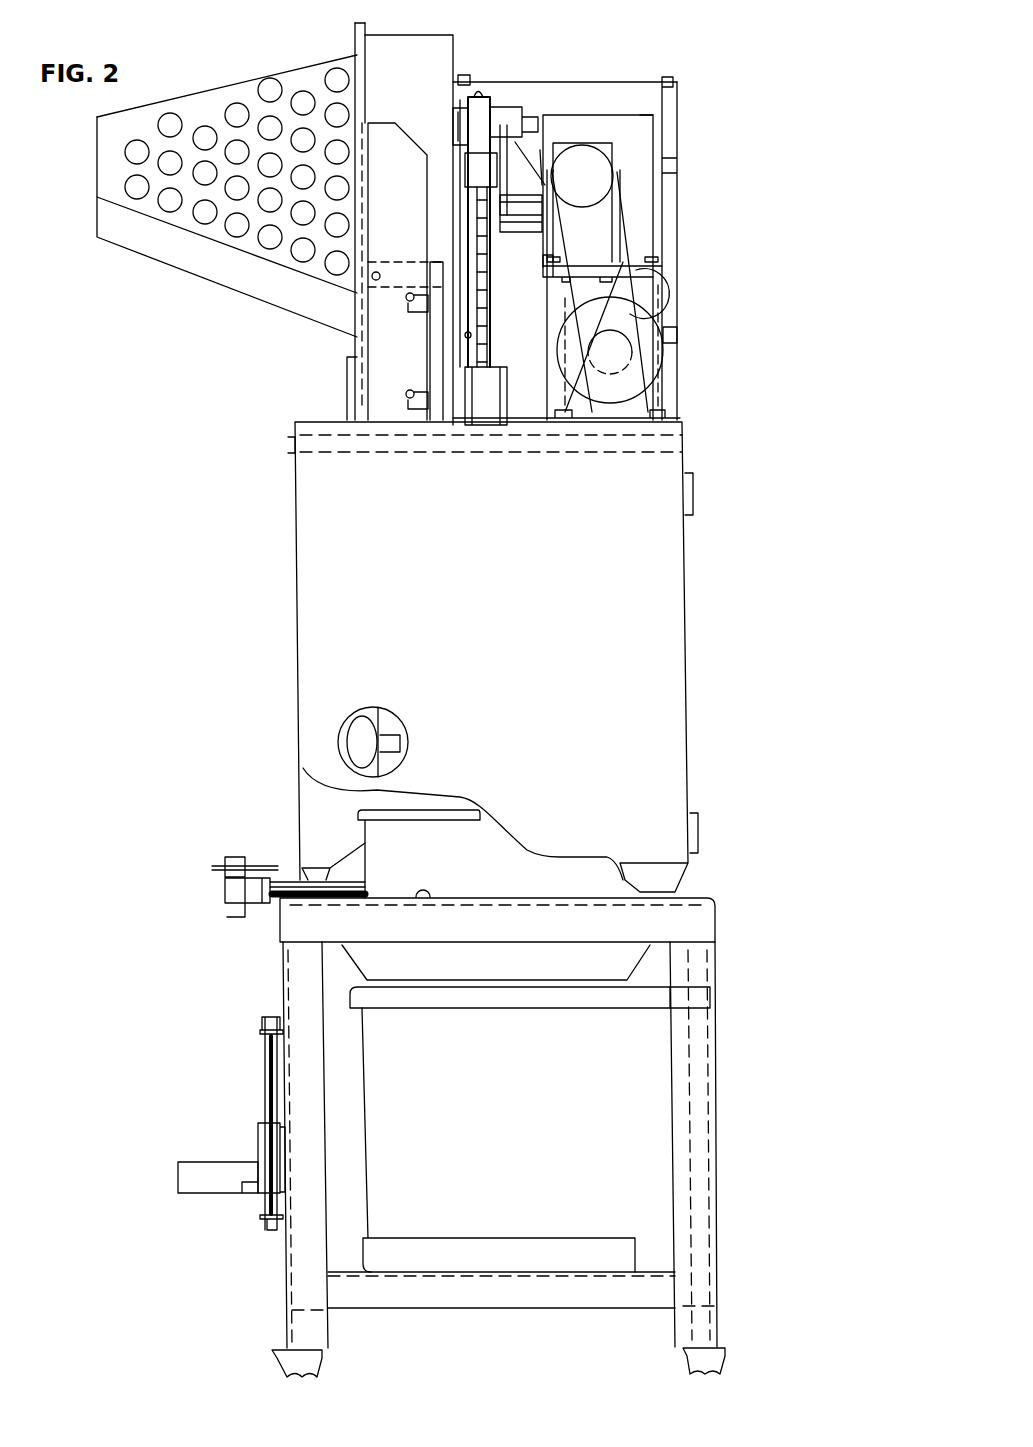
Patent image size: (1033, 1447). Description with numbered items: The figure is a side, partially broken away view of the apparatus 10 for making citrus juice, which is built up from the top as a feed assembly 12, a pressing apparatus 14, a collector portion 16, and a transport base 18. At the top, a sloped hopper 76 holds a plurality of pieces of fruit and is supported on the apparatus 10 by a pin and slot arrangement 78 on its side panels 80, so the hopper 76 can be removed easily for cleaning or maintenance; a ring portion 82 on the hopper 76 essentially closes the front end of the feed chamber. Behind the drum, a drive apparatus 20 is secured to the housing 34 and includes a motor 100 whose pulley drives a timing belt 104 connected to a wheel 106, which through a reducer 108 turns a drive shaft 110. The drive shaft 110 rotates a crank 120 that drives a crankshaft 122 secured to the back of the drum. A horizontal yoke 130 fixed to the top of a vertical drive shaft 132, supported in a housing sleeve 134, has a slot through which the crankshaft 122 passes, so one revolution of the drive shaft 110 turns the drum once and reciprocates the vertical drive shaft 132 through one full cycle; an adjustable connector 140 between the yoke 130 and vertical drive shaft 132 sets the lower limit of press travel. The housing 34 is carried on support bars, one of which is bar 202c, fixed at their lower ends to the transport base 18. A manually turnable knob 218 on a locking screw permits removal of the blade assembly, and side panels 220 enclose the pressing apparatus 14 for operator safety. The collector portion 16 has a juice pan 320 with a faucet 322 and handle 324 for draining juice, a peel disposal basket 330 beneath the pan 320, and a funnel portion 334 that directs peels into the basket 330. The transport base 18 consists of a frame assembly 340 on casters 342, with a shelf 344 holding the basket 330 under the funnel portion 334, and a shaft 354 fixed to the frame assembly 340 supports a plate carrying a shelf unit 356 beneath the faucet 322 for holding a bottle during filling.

The apparatus 10 is at (190, 607).
The feed assembly 12 is at (290, 333).
The pressing apparatus 14 is at (444, 660).
The collector portion 16 is at (243, 945).
The transport base 18 is at (718, 1173).
The drive apparatus 20 is at (613, 53).
The housing 34 is at (426, 82).
The hopper 76 is at (240, 267).
The pin and slot arrangement 78 is at (408, 396).
The side panels 80 is at (410, 212).
The ring portion 82 is at (363, 30).
The motor 100 is at (660, 327).
The timing belt 104 is at (568, 257).
The wheel 106 is at (580, 143).
The reducer 108 is at (643, 105).
The drive shaft 110 is at (597, 268).
The crank 120 is at (512, 153).
The crankshaft 122 is at (495, 103).
The yoke 130 is at (497, 100).
The vertical drive shaft 132 is at (667, 340).
The housing sleeve 134 is at (503, 387).
The adjustable connector 140 is at (477, 167).
The bar 202c is at (377, 790).
The knob 218 is at (360, 740).
The side panels 220 is at (523, 590).
The juice pan 320 is at (456, 870).
The faucet 322 is at (225, 913).
The handle 324 is at (263, 862).
The peel disposal basket 330 is at (538, 1115).
The funnel portion 334 is at (513, 980).
The frame assembly 340 is at (697, 1053).
The casters 342 is at (268, 1365).
The shelf 344 is at (335, 1260).
The shaft 354 is at (267, 1070).
The shelf unit 356 is at (203, 1173).